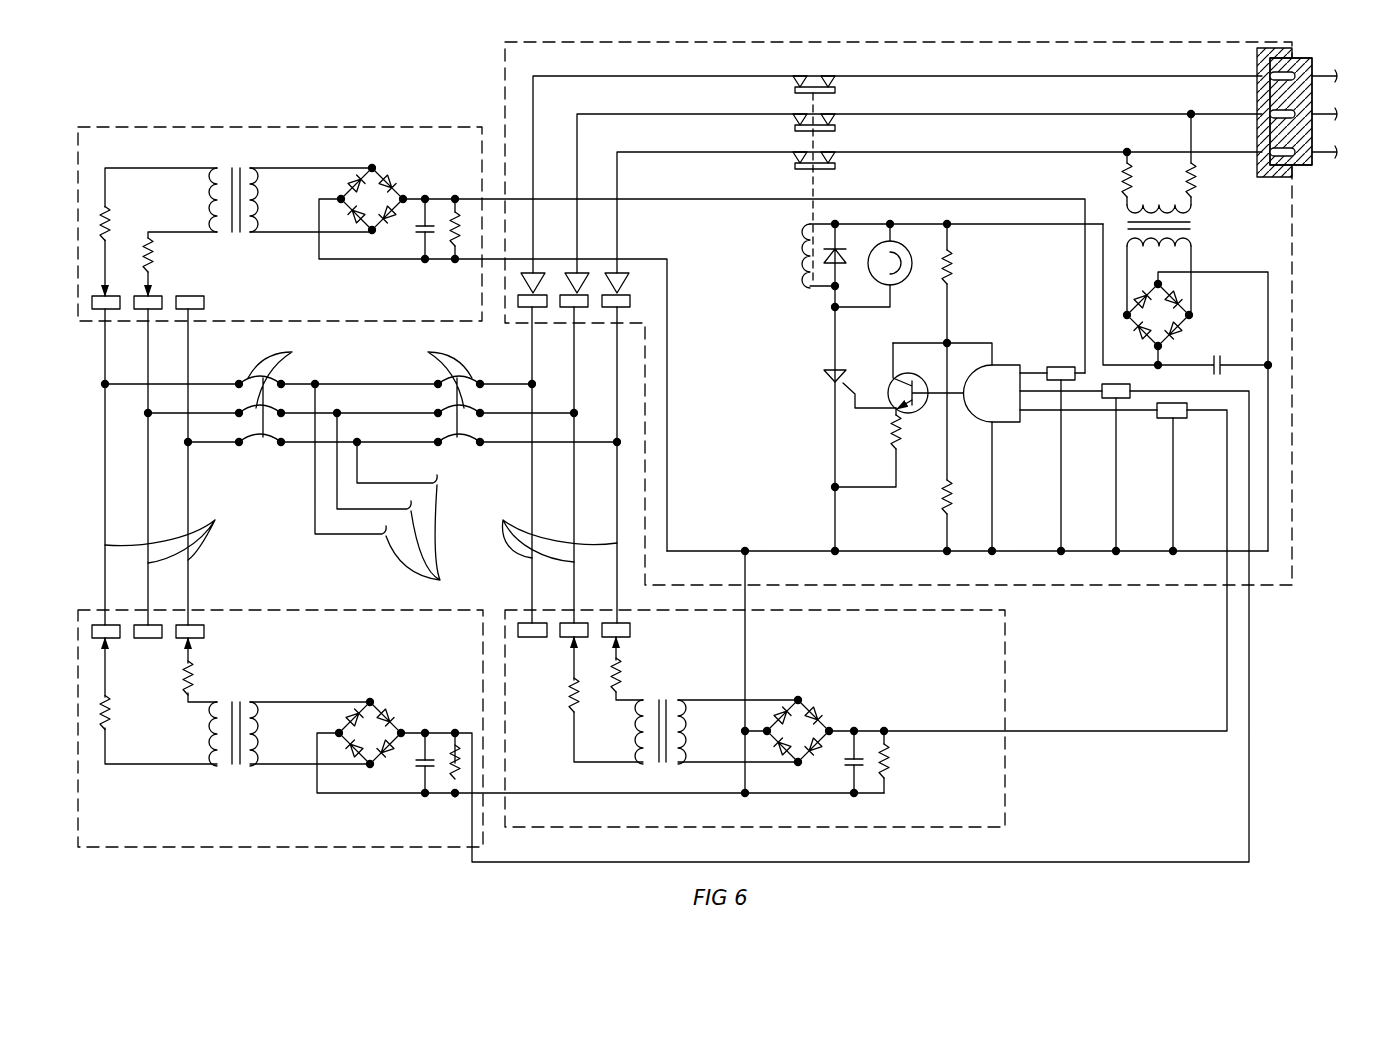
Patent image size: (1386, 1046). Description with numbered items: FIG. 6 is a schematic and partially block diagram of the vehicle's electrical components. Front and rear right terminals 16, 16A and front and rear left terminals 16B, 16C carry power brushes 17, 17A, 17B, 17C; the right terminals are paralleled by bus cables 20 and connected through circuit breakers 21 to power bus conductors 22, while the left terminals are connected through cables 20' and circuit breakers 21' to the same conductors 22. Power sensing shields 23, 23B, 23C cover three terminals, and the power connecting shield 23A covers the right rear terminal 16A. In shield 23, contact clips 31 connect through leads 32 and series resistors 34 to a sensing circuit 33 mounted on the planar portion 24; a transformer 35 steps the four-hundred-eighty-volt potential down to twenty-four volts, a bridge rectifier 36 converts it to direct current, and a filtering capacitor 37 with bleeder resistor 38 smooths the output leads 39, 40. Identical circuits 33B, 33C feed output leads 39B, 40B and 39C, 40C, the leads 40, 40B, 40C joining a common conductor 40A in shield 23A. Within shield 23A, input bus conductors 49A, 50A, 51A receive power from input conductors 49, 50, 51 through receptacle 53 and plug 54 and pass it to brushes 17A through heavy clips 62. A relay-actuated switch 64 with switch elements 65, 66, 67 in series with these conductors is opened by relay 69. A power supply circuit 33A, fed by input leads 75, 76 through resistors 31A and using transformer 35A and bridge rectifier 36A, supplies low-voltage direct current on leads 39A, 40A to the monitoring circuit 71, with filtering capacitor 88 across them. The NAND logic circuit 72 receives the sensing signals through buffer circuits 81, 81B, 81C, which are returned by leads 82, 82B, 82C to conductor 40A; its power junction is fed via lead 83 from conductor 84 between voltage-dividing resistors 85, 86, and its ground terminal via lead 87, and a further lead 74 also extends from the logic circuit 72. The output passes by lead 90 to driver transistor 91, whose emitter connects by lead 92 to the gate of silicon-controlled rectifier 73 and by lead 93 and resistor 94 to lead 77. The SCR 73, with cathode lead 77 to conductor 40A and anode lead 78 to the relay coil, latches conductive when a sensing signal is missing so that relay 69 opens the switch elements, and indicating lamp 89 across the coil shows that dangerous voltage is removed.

The right front terminal 16 is at (640, 630).
The right rear terminal 16A is at (640, 301).
The left front terminal 16B is at (212, 632).
The left rear terminal 16C is at (212, 303).
The power brushes 17 is at (614, 622).
The brushes of rear right terminal 17A is at (627, 293).
The indicator lamp 17B is at (192, 623).
The indicator lamp 17C is at (197, 296).
The bus cables 20 is at (554, 465).
The cables 20' is at (170, 467).
The circuit breakers 21 is at (510, 392).
The circuit breakers 21' is at (270, 392).
The power bus conductors 22 is at (394, 488).
The right front insulative shield 23 is at (1012, 790).
The power connecting shield 23A is at (1272, 586).
The left front insulative shield 23B is at (326, 850).
The left rear insulative shield 23C is at (303, 125).
The planar portion 24 is at (1339, 176).
The contact clips 31 is at (612, 648).
The resistors 31A is at (1200, 176).
The leads 32 is at (612, 705).
The sensing circuit 33 is at (815, 678).
The power supply circuit 33A is at (1205, 255).
The sensing circuit 33B is at (408, 712).
The sensing circuit 33C is at (415, 178).
The resistors 34 is at (612, 678).
The transformer 35 is at (663, 700).
The voltage reducing transformer 35A is at (1193, 240).
The full wave bridge rectifier 36 is at (813, 723).
The bridge rectifier 36A is at (1190, 318).
The filtering capacitor 37 is at (846, 766).
The bleeder resistor 38 is at (887, 776).
The output lead 39 is at (1112, 731).
The output lead 39A is at (1049, 228).
The output lead 39B is at (1250, 792).
The output lead 39C is at (660, 197).
The output lead 40 is at (745, 633).
The common conductor 40A is at (1270, 426).
The output lead 40B is at (562, 797).
The output lead 40C is at (493, 262).
The power input conductor 49 is at (1325, 73).
The input bus conductor 49A is at (958, 75).
The power input conductor 50 is at (1325, 111).
The input bus conductor 50A is at (958, 113).
The power input conductor 51 is at (1325, 149).
The input bus conductor 51A is at (958, 151).
The three-conductor receptacle 53 is at (1278, 178).
The plug 54 is at (1300, 166).
The high power capacity clips 62 is at (622, 290).
The relay-actuated switch 64 is at (783, 175).
The switch element 65 is at (836, 82).
The switch element 66 is at (836, 120).
The switch element 67 is at (836, 158).
The relay 69 is at (786, 296).
The monitoring circuit 71 is at (1032, 567).
The logic circuit 72 is at (992, 393).
The silicon-controlled rectifier 73 is at (832, 378).
The amplifier output conductor 74 is at (1036, 412).
The input lead 75 is at (1122, 164).
The input lead 76 is at (1190, 133).
The lead 77 is at (834, 422).
The lead 78 is at (834, 343).
The input buffer circuit 81 is at (1176, 420).
The input buffer circuit 81B is at (1107, 400).
The input buffer circuit 81C is at (1060, 367).
The lead 82 is at (1174, 530).
The lead 82B is at (1117, 530).
The lead 82C is at (1060, 505).
The lead 83 is at (982, 348).
The conductor 84 is at (951, 335).
The resistor 85 is at (952, 292).
The resistor 86 is at (940, 500).
The lead 87 is at (994, 526).
The filtering capacitor 88 is at (1218, 346).
The indicating lamp 89 is at (903, 283).
The lead 90 is at (964, 396).
The NPN driver transistor 91 is at (917, 415).
The lead 92 is at (856, 393).
The lead 93 is at (892, 420).
The resistor 94 is at (893, 455).